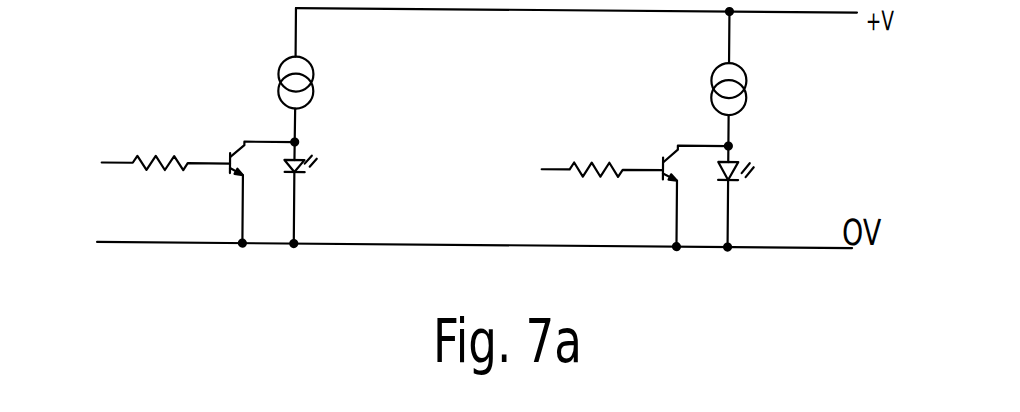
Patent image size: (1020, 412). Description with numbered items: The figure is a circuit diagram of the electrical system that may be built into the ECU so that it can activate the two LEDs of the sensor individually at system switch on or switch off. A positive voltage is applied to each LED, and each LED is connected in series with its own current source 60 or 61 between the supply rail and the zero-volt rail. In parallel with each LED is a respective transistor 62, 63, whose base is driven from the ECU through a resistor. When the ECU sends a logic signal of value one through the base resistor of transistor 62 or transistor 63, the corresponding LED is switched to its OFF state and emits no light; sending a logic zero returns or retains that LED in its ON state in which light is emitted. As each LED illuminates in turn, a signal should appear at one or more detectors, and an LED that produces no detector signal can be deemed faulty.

The current source 60 is at (312, 75).
The current source 61 is at (741, 78).
The transistor 62 is at (232, 184).
The transistor 63 is at (666, 186).